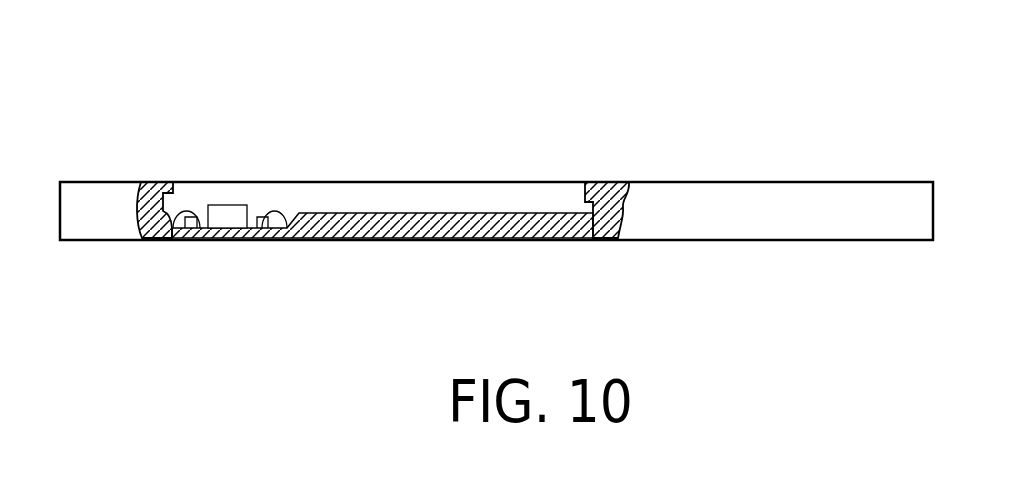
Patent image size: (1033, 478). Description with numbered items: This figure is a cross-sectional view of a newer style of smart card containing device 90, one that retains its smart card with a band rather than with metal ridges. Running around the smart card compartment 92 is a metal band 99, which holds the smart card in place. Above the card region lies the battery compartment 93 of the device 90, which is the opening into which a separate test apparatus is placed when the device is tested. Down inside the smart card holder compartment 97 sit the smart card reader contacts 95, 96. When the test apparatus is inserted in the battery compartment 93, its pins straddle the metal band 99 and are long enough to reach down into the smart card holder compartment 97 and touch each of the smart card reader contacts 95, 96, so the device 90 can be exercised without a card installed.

The smart card containing device 90 is at (712, 88).
The smart card compartment 92 is at (293, 225).
The battery compartment 93 is at (352, 192).
The smart card reader contact 95 is at (163, 238).
The smart card reader contact 96 is at (294, 236).
The smart card holder compartment 97 is at (158, 182).
The metal band 99 is at (230, 213).